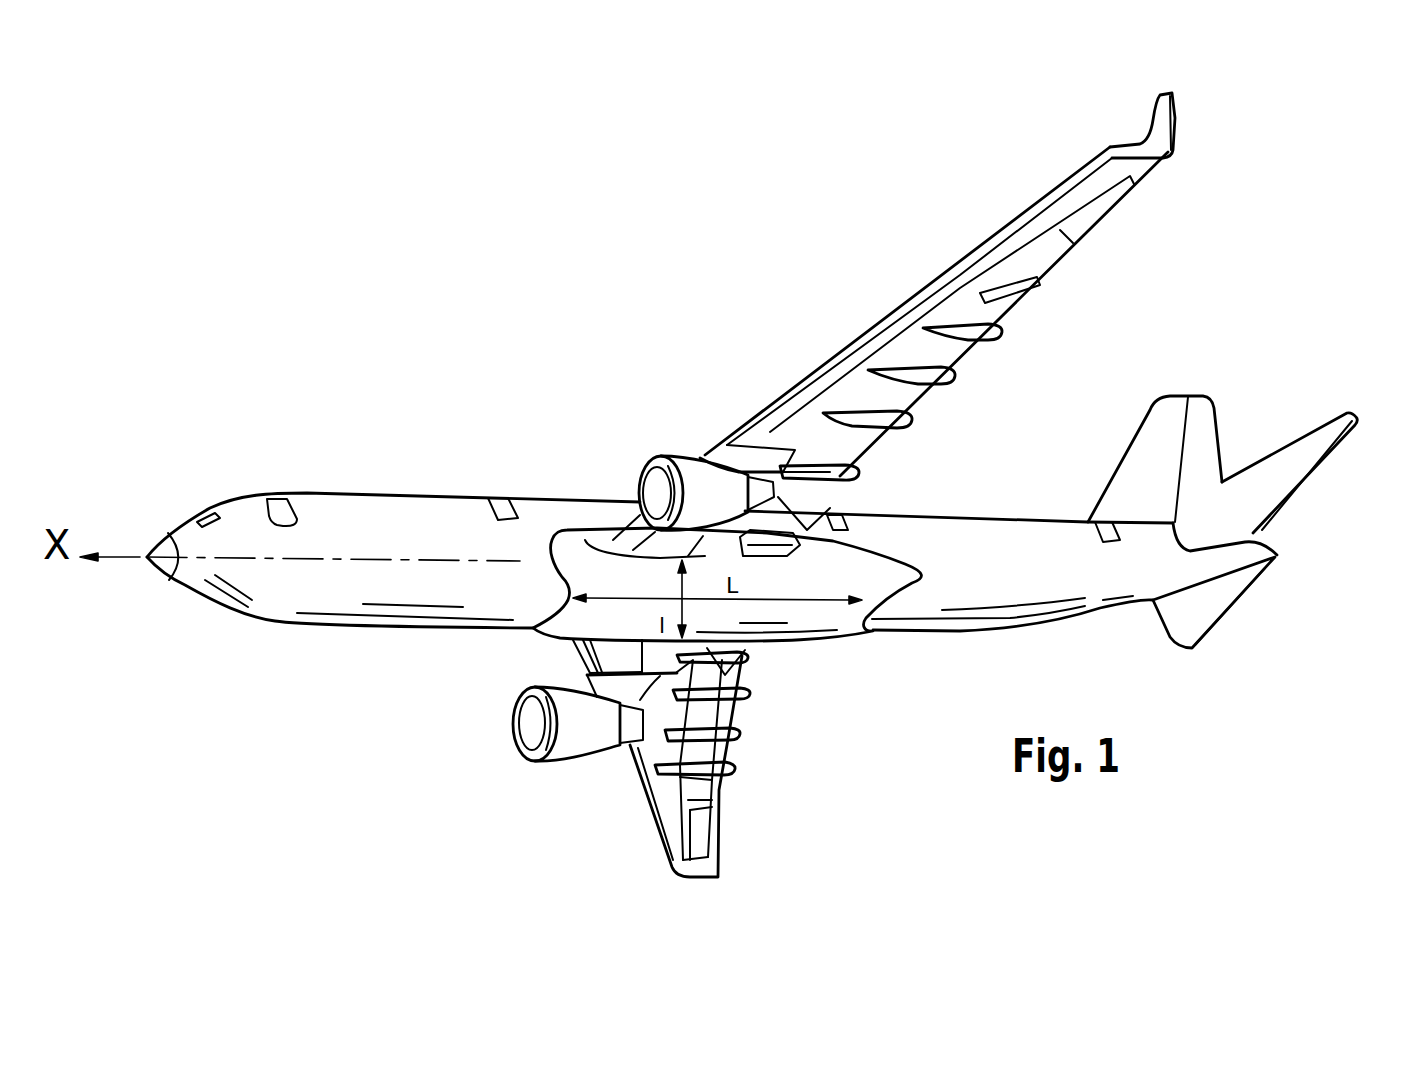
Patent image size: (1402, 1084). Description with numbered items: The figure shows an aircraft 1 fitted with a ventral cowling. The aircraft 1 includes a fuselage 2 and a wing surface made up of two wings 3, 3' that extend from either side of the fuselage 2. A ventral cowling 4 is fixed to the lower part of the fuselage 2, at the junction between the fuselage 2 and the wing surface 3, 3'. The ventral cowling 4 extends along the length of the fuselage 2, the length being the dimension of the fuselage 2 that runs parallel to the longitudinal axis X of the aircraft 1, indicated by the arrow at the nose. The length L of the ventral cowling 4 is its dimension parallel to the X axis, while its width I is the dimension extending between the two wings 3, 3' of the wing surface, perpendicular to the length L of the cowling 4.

The aircraft 1 is at (350, 683).
The fuselage 2 is at (393, 522).
The wing surface 3 is at (937, 311).
The wing surface 3' is at (683, 758).
The ventral cowling 4 is at (811, 620).